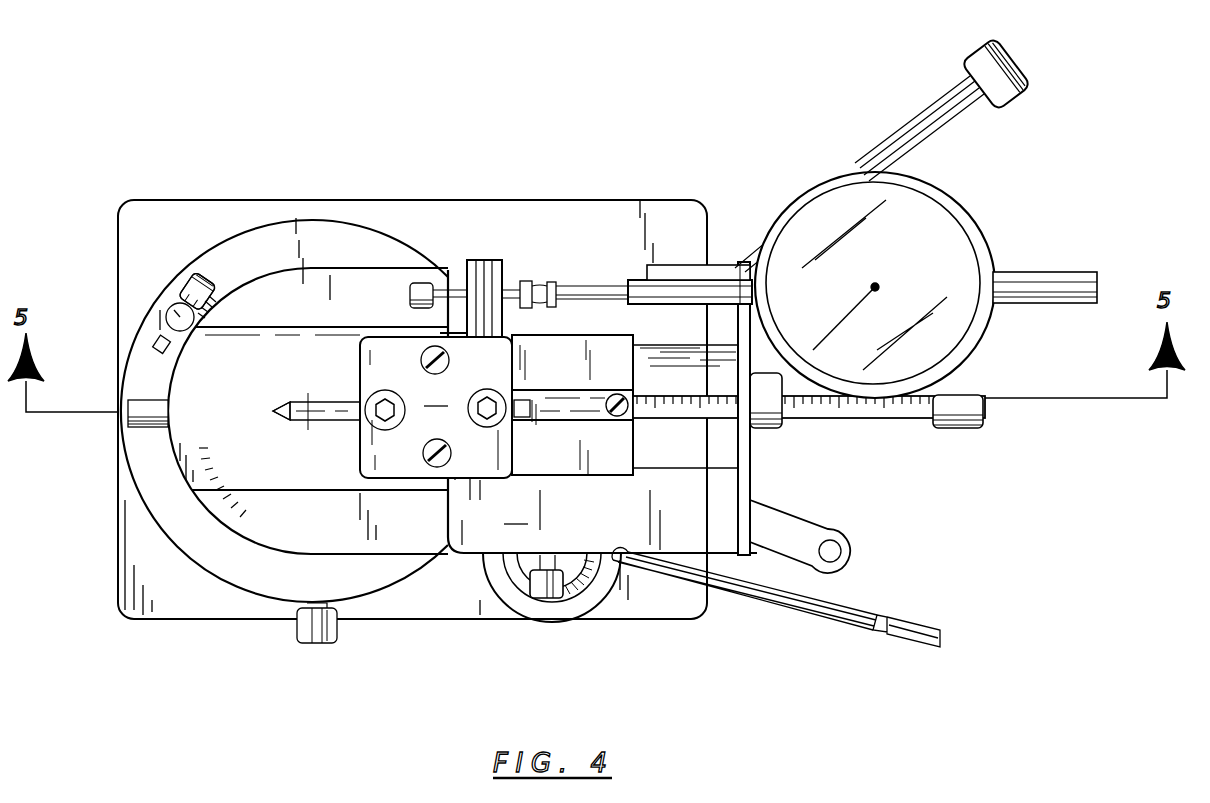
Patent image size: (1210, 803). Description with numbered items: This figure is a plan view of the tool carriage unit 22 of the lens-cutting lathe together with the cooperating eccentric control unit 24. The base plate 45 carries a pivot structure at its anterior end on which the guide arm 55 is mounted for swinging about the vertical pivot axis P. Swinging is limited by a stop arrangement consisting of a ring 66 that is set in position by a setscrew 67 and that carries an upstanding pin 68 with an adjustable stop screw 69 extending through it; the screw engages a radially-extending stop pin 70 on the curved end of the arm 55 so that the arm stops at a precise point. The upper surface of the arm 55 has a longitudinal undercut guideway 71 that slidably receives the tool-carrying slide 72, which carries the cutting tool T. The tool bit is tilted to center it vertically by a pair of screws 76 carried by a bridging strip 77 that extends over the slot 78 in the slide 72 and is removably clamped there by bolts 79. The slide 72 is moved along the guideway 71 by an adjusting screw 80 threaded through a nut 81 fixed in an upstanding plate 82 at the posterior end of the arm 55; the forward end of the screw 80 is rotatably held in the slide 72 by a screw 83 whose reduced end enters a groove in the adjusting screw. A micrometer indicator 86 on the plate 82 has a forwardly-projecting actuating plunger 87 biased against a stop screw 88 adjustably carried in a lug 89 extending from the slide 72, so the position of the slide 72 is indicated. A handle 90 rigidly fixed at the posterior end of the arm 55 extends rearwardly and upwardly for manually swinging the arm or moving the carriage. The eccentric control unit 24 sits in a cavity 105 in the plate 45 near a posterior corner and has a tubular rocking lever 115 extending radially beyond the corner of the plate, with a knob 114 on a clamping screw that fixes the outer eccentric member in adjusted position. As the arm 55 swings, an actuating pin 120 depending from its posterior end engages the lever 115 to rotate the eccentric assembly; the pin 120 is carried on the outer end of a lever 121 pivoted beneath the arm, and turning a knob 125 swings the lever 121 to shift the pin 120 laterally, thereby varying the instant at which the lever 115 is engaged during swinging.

The base plate 45 is at (190, 222).
The tool carriage unit 22 is at (354, 252).
The guideway 71 is at (242, 340).
The cutting tool T is at (342, 400).
The vertical pivot axis P is at (302, 415).
The upstanding pin 68 is at (168, 312).
The adjustable stop screw 69 is at (213, 275).
The stop pin 70 is at (142, 420).
The ring 66 is at (200, 552).
The setscrew 67 is at (306, 641).
The guide arm 55 is at (602, 411).
The lug 89 is at (480, 260).
The stop screw 88 is at (408, 297).
The bridging strip 77 is at (436, 405).
The screws 76 is at (382, 392).
The bolts 79 is at (422, 453).
The tool-carrying slide 72 is at (558, 350).
The slot 78 is at (530, 425).
The screw 83 is at (617, 394).
The adjusting screw 80 is at (826, 418).
The nut 81 is at (768, 430).
The upstanding plate 82 is at (738, 496).
The actuating plunger 87 is at (593, 290).
The micrometer indicator 86 is at (968, 228).
The handle 90 is at (924, 128).
The lever 121 is at (790, 524).
The actuating pin 120 is at (842, 552).
The rocking lever 115 is at (787, 603).
The knob 114 is at (910, 617).
The eccentric control unit 24 is at (568, 603).
The cavity 105 is at (540, 610).
The knob 125 is at (534, 583).